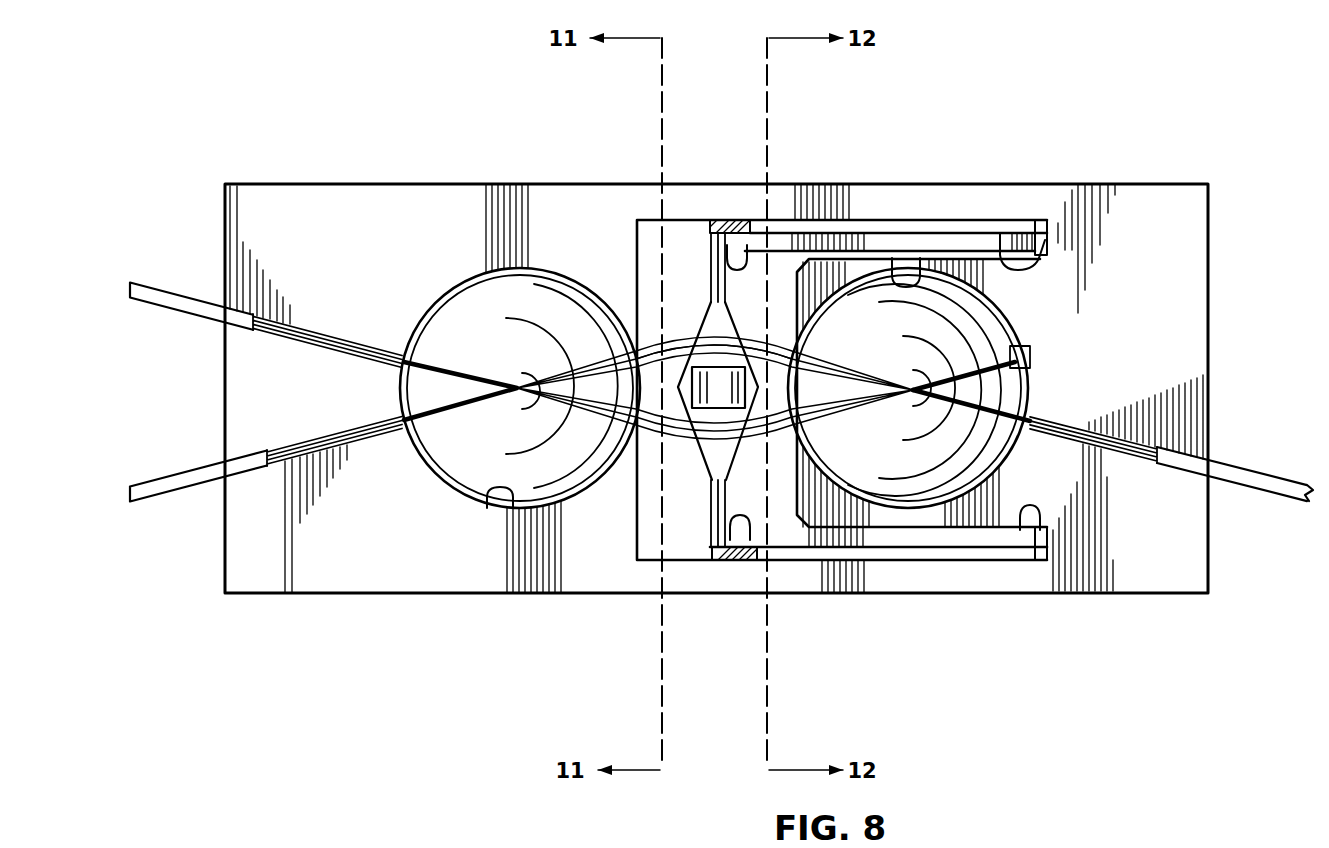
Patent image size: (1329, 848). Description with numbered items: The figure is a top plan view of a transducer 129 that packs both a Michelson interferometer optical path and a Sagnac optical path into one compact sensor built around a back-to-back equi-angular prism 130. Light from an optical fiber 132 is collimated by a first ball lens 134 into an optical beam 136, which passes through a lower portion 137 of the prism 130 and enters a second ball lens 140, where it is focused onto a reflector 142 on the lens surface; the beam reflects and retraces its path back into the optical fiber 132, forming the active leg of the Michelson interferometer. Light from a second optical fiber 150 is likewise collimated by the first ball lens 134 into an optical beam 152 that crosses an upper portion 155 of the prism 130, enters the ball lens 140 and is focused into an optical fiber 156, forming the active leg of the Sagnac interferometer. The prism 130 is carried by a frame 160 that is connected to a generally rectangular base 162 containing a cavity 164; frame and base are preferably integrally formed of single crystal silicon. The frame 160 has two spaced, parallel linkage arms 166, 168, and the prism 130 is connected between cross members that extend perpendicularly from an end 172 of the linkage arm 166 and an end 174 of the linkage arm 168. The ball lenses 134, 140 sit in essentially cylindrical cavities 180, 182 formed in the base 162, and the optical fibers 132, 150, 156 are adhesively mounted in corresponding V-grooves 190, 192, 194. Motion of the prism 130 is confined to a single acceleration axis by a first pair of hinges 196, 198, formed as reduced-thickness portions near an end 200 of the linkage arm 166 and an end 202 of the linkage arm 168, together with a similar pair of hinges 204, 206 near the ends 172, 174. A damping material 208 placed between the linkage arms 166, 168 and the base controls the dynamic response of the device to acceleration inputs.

The transducer 129 is at (481, 690).
The back-to-back equi-angular prism 130 is at (700, 438).
The optical fiber 132 is at (156, 287).
The first ball lens 134 is at (455, 266).
The optical beam 136 is at (656, 433).
The lower portion of the prism 137 is at (748, 443).
The second ball lens 140 is at (889, 512).
The reflector 142 is at (1018, 360).
The optical fiber 150 is at (178, 473).
The optical beam 152 is at (656, 345).
The upper portion of the prism 155 is at (690, 338).
The optical fiber 156 is at (1246, 472).
The frame 160 is at (794, 612).
The base 162 is at (268, 184).
The cavity 164 is at (640, 560).
The linkage arm 166 is at (945, 220).
The linkage arm 168 is at (912, 548).
The end of the linkage arm 172 is at (709, 220).
The end of the linkage arm 174 is at (738, 545).
The cavity 180 is at (492, 505).
The cavity 182 is at (900, 268).
The V-groove 190 is at (263, 313).
The V-groove 192 is at (262, 448).
The V-groove 194 is at (1158, 440).
The hinge 196 is at (997, 228).
The hinge 198 is at (1040, 560).
The end of the linkage arm 200 is at (1047, 217).
The end of the linkage arm 202 is at (1030, 560).
The hinge 204 is at (709, 214).
The hinge 206 is at (757, 478).
The damping material 208 is at (745, 252).